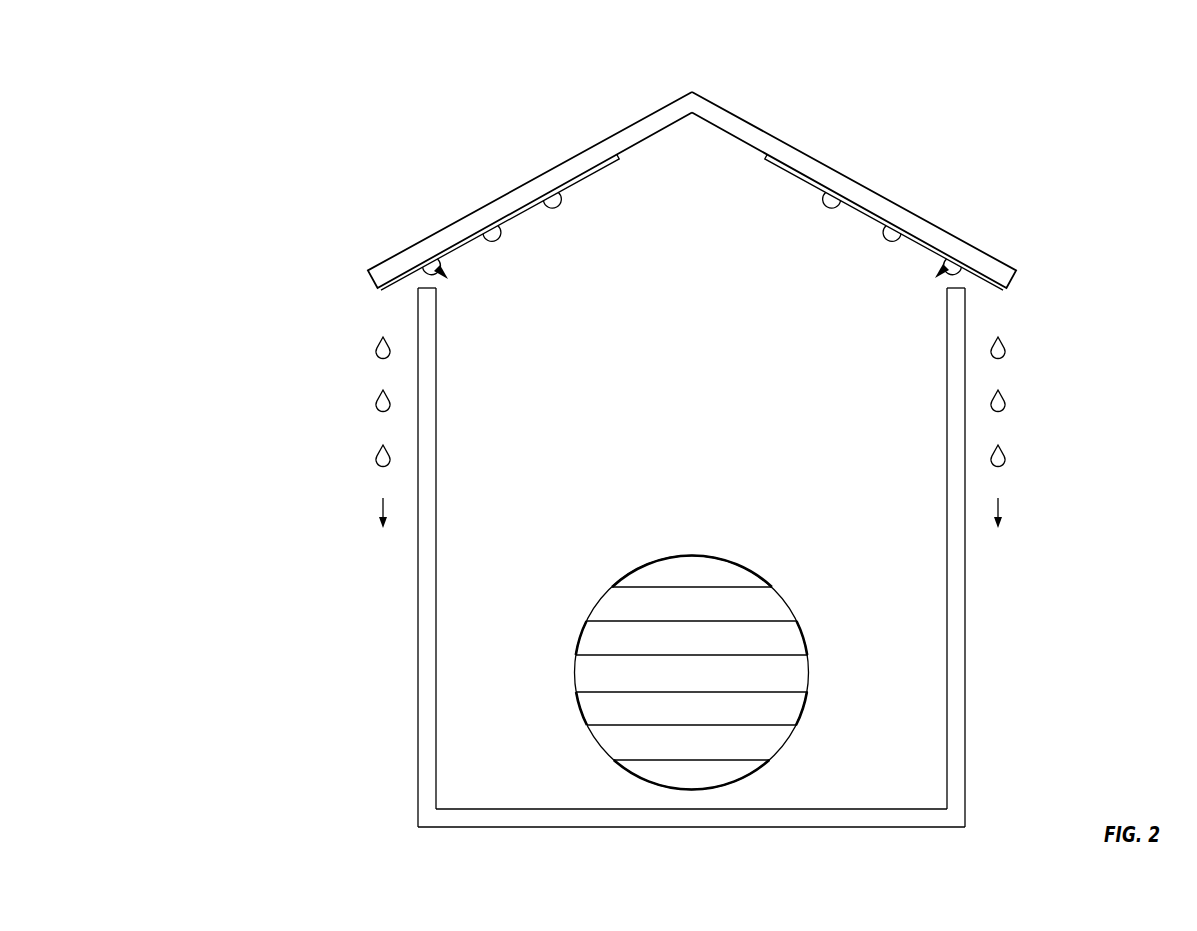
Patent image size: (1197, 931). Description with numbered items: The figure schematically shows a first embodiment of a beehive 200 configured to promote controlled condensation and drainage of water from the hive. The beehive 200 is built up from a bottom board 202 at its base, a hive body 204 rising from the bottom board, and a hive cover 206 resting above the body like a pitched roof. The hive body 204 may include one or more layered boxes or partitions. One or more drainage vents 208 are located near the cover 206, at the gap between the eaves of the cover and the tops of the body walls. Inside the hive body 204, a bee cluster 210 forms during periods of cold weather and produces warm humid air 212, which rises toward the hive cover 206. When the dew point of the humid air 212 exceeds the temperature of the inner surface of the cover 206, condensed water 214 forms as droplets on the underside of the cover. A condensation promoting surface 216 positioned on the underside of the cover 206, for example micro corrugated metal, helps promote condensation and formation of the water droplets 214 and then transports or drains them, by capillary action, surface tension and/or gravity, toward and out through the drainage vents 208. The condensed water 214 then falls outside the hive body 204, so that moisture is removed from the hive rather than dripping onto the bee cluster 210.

The beehive 200 is at (722, 66).
The bottom board 202 is at (402, 818).
The hive body 204 is at (402, 627).
The hive cover 206 is at (357, 262).
The drainage vent 208 is at (405, 294).
The bee cluster 210 is at (692, 672).
The warm humid air 212 is at (796, 359).
The condensed water 214 is at (290, 402).
The condensation promoting surface 216 is at (590, 215).